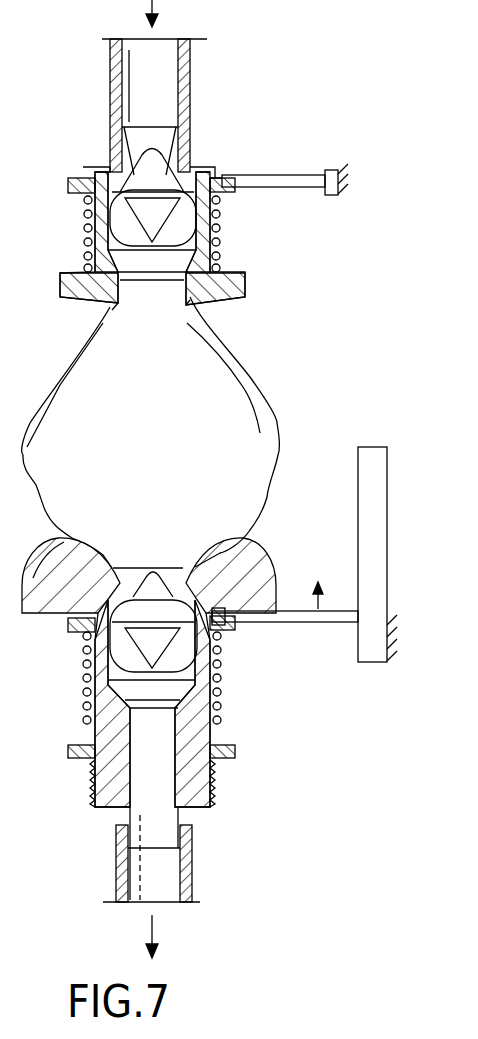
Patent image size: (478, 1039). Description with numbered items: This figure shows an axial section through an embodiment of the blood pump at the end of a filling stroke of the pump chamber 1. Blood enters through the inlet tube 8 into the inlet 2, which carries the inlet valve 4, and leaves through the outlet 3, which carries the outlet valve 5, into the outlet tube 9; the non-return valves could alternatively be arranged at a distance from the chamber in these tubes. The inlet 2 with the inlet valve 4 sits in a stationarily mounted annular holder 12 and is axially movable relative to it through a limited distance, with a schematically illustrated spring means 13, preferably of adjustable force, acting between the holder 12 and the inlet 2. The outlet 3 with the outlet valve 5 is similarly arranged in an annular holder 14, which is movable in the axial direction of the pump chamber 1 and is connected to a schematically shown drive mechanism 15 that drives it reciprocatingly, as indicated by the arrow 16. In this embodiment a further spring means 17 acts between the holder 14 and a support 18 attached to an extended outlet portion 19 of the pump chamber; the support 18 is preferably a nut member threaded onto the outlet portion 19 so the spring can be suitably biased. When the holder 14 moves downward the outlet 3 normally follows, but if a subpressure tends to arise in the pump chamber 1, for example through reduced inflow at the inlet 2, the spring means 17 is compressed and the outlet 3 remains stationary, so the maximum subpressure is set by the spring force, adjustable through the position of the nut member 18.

The pump chamber 1 is at (250, 372).
The inlet 2 is at (192, 315).
The outlet 3 is at (145, 558).
The inlet valve 4 is at (183, 185).
The outlet valve 5 is at (178, 652).
The inlet tube 8 is at (192, 88).
The outlet tube 9 is at (192, 868).
The annular holder 12 is at (235, 178).
The spring means 13 is at (222, 242).
The annular holder 14 is at (222, 628).
The drive mechanism 15 is at (368, 478).
The arrow 16 is at (316, 607).
The spring means 17 is at (78, 676).
The support 18 is at (225, 742).
The extended outlet portion 19 is at (210, 778).